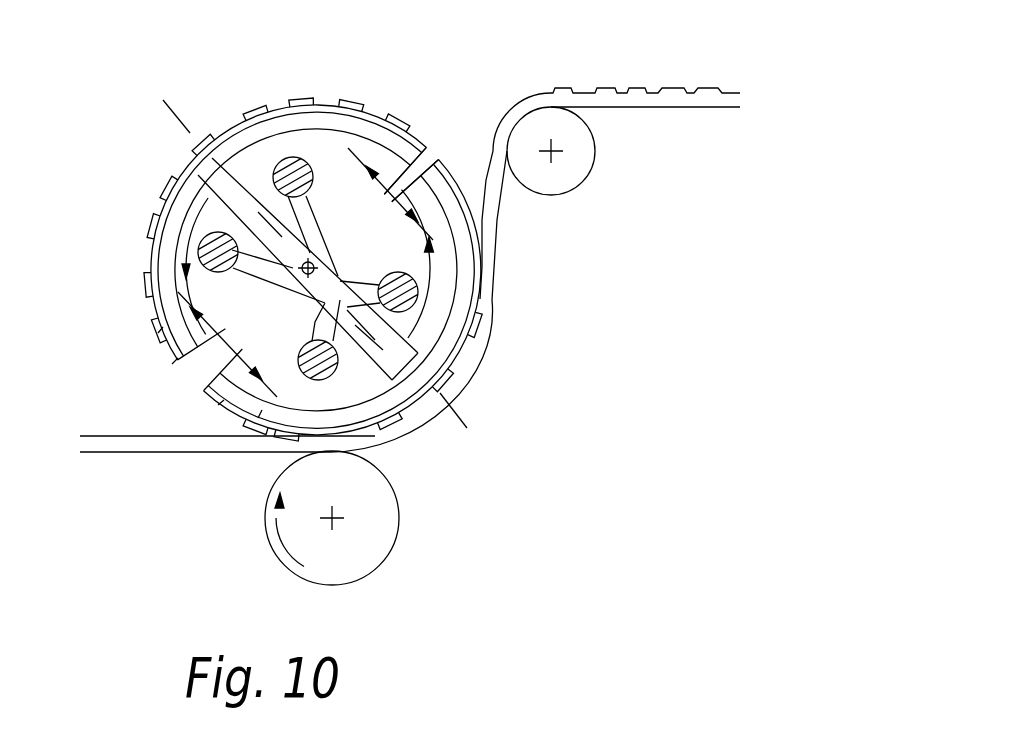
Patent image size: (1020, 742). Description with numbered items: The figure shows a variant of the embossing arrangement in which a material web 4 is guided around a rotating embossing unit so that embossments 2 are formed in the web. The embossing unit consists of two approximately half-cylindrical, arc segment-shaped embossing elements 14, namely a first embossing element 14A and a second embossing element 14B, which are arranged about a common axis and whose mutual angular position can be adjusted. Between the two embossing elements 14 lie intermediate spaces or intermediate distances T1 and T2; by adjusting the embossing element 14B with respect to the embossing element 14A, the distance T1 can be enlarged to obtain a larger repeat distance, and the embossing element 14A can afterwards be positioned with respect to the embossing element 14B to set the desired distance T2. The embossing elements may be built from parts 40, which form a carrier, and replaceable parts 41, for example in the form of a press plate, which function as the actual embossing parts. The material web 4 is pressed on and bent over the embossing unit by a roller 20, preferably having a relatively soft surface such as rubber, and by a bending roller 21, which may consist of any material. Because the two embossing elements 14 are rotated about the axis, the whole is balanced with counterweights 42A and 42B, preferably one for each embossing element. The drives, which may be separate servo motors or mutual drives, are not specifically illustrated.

The embossments 2 is at (653, 92).
The material web 4 is at (170, 442).
The embossing elements 14 is at (263, 133).
The embossing element 14A is at (448, 345).
The embossing element 14B is at (163, 294).
The roller 20 is at (365, 533).
The bending roller 21 is at (569, 148).
The parts 40 is at (163, 327).
The parts 41 is at (178, 358).
The counterweight 42A is at (285, 255).
The counterweight 42B is at (437, 303).
The intermediate distance T1 is at (225, 352).
The intermediate distance T2 is at (388, 197).